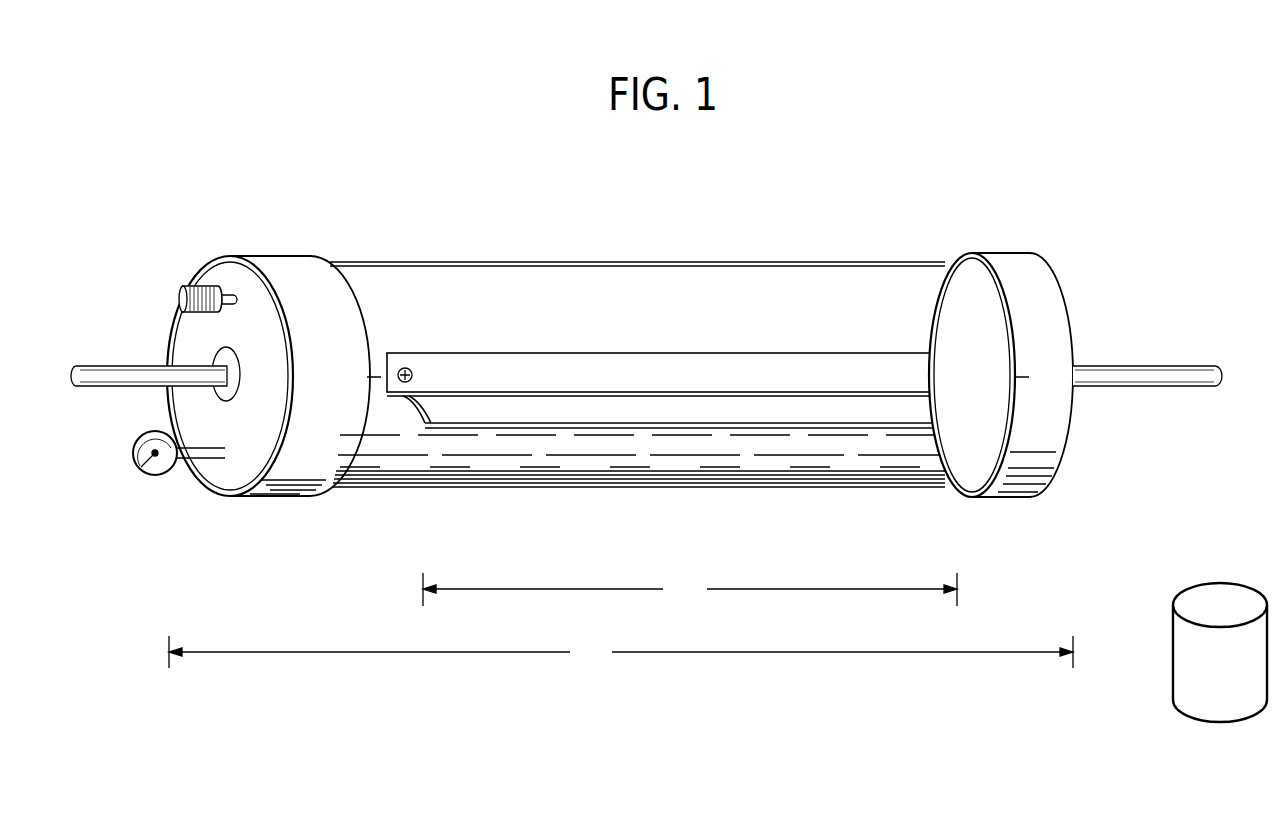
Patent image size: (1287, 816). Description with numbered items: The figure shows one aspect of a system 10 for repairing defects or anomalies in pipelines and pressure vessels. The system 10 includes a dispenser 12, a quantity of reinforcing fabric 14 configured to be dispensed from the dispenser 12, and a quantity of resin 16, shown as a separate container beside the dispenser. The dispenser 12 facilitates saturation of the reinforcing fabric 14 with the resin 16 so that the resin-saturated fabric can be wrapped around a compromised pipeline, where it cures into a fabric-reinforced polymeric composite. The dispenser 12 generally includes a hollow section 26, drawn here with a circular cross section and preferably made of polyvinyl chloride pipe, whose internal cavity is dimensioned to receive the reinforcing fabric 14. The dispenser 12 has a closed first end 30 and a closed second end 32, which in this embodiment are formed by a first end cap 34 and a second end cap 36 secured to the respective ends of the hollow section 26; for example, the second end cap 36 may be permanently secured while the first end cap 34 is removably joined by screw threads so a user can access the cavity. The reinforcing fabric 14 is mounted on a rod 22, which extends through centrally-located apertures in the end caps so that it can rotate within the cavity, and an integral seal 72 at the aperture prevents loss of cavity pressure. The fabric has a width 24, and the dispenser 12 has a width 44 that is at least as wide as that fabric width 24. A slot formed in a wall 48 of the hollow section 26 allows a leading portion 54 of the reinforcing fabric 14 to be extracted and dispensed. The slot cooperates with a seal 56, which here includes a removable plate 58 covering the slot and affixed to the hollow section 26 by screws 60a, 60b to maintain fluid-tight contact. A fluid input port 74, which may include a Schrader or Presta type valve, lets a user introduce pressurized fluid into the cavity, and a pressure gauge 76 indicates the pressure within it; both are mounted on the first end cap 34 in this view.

The system 10 is at (918, 232).
The dispenser 12 is at (768, 285).
The reinforcing fabric 14 is at (930, 415).
The resin 16 is at (1209, 707).
The rod 22 is at (1148, 368).
The fabric width 24 is at (674, 623).
The hollow section 26 is at (392, 293).
The closed first end 30 is at (272, 262).
The closed second end 32 is at (1007, 267).
The first end cap 34 is at (300, 295).
The second end cap 36 is at (1033, 305).
The dispenser width 44 is at (580, 687).
The wall 48 is at (405, 462).
The leading portion 54 is at (797, 411).
The seal 56 is at (515, 365).
The removable plate 58 is at (607, 370).
The screw 60a is at (413, 382).
The screw 60b is at (932, 377).
The integral seal 72 is at (220, 393).
The fluid input port 74 is at (178, 300).
The pressure gauge 76 is at (133, 460).